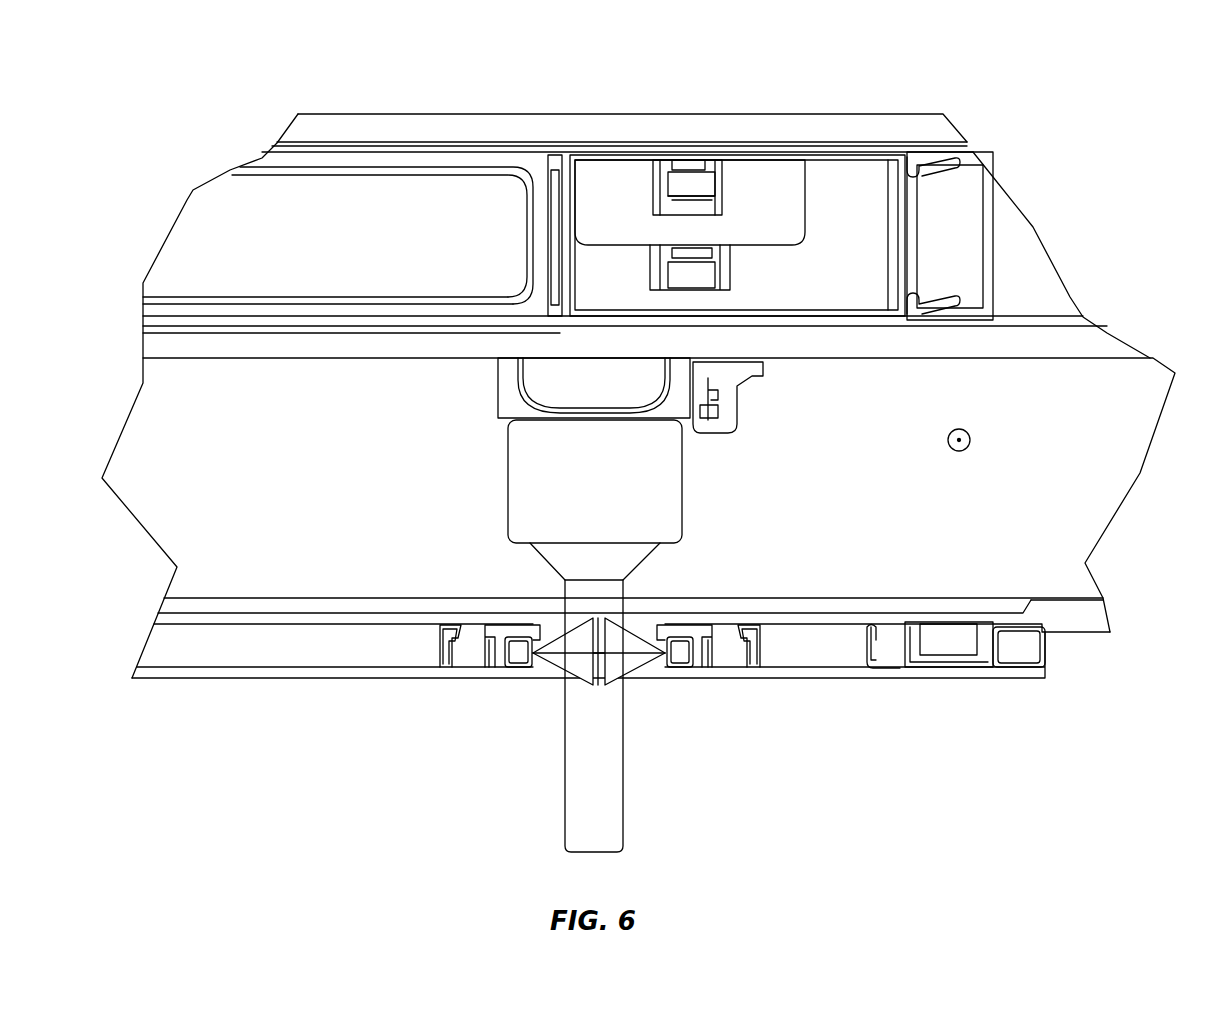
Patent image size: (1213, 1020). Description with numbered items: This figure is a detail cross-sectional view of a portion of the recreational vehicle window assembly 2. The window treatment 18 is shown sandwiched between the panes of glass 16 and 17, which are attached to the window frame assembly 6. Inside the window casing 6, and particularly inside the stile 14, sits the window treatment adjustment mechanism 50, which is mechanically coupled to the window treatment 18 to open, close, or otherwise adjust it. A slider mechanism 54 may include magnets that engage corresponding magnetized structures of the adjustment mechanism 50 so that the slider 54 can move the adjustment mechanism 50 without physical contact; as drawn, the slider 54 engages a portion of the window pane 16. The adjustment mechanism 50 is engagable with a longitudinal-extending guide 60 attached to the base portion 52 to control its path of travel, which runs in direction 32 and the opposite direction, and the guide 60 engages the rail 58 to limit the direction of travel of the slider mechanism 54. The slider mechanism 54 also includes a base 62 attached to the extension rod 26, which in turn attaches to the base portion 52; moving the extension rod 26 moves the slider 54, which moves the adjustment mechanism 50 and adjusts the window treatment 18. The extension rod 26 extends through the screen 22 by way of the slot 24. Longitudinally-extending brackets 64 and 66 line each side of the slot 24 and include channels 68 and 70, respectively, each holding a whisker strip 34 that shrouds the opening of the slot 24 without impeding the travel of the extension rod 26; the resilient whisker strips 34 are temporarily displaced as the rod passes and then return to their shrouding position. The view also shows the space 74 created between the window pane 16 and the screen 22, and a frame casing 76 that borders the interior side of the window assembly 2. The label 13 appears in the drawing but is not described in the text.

The recreational vehicle window assembly 2 is at (316, 74).
The window frame assembly 6 is at (587, 148).
The roof panel region 13 is at (906, 42).
The stile 14 is at (853, 327).
The window pane 16 is at (948, 343).
The pane of glass 17 is at (697, 123).
The window treatment 18 is at (310, 212).
The screen 22 is at (293, 686).
The slot 24 is at (551, 682).
The extension rod 26 is at (625, 788).
The direction 32 is at (965, 429).
The whisker strip 34 is at (636, 662).
The window treatment adjustment mechanism 50 is at (825, 229).
The base portion 52 is at (498, 388).
The slider mechanism 54 is at (441, 470).
The rail 58 is at (742, 405).
The guide 60 is at (707, 382).
The base 62 is at (508, 490).
The bracket 64 is at (460, 672).
The bracket 66 is at (748, 672).
The channel 68 is at (510, 672).
The channel 70 is at (682, 634).
The space 74 is at (989, 527).
The frame casing 76 is at (1093, 606).